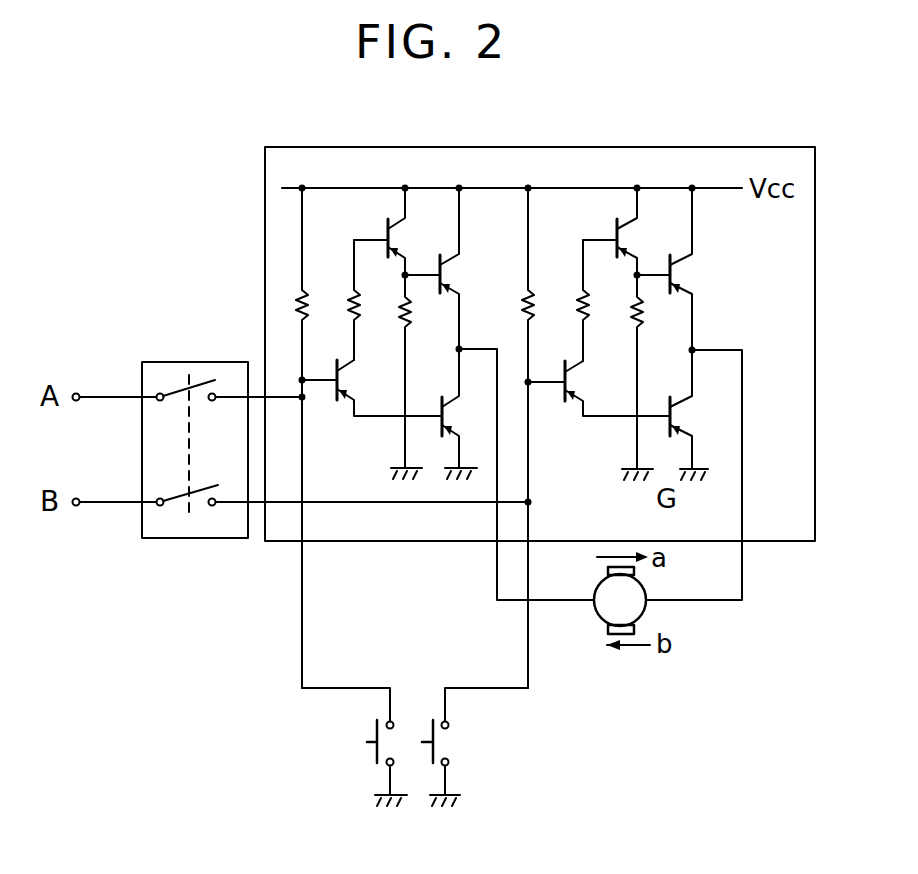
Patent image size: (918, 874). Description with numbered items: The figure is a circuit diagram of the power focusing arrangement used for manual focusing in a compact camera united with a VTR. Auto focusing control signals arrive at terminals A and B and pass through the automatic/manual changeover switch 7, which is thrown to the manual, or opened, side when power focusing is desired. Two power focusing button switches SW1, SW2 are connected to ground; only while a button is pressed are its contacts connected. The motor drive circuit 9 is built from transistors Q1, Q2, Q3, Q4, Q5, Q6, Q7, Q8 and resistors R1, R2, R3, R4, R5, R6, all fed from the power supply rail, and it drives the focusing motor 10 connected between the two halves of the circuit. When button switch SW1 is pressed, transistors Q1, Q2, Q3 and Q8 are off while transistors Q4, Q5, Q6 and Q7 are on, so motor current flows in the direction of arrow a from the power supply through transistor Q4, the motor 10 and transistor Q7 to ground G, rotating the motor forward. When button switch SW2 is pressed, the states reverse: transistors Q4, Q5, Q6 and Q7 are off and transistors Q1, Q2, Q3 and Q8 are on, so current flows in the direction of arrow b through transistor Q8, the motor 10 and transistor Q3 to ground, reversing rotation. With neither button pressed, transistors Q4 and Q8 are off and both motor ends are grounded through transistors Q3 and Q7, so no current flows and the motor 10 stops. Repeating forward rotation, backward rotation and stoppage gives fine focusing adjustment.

The automatic/manual changeover switch 7 is at (223, 528).
The motor drive circuit 9 is at (775, 518).
The focusing motor 10 is at (597, 618).
The resistor R1 is at (318, 438).
The resistor R2 is at (370, 300).
The resistor R3 is at (423, 371).
The resistor R4 is at (545, 438).
The resistor R5 is at (599, 300).
The resistor R6 is at (654, 372).
The transistor Q1 is at (372, 388).
The transistor Q2 is at (396, 231).
The transistor Q3 is at (466, 408).
The transistor Q4 is at (449, 268).
The transistor Q5 is at (599, 388).
The transistor Q6 is at (625, 231).
The transistor Q7 is at (695, 409).
The transistor Q8 is at (682, 269).
The power focusing button switch SW1 is at (344, 747).
The power focusing button switch SW2 is at (479, 747).